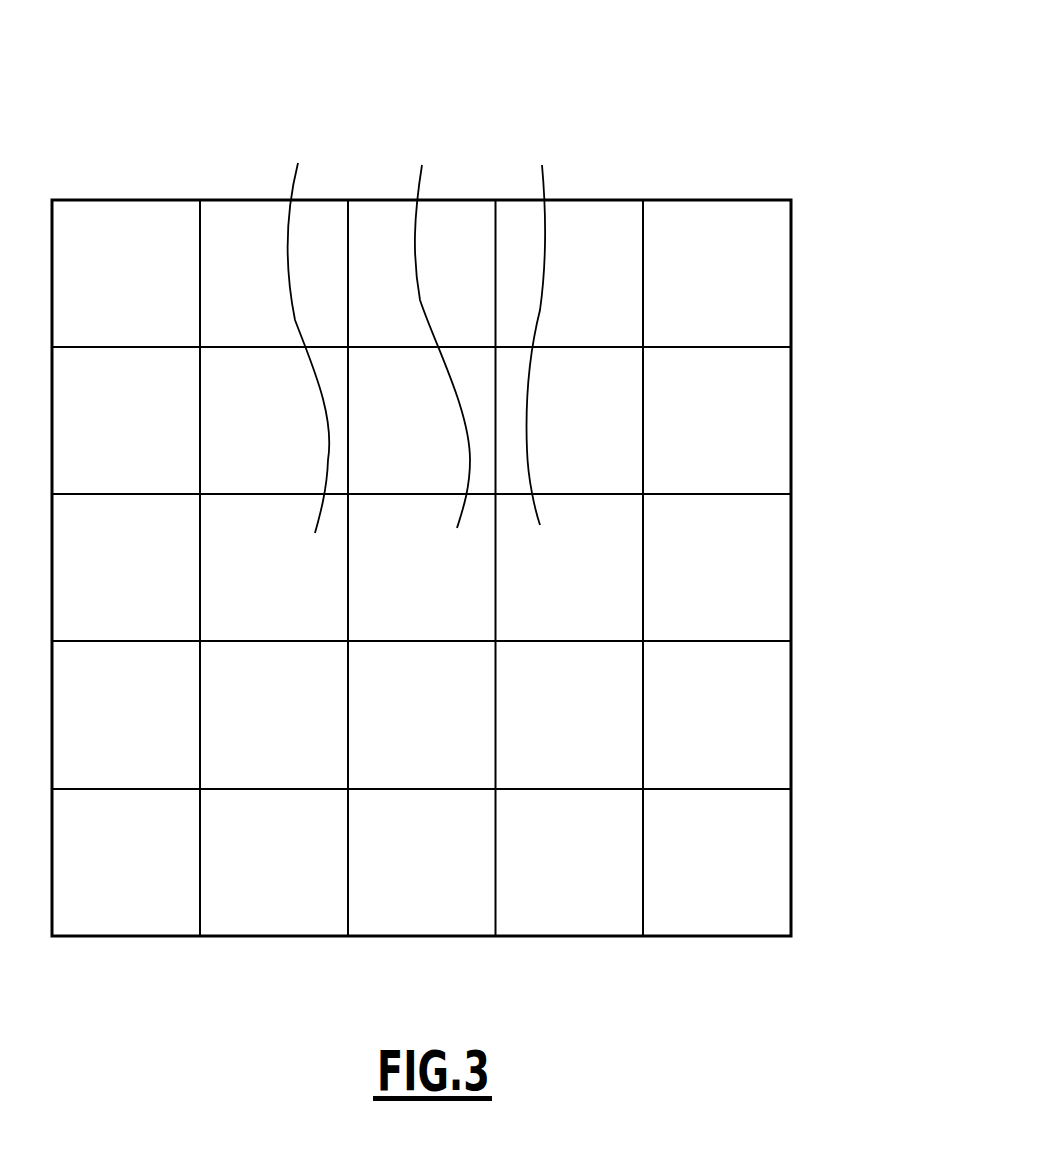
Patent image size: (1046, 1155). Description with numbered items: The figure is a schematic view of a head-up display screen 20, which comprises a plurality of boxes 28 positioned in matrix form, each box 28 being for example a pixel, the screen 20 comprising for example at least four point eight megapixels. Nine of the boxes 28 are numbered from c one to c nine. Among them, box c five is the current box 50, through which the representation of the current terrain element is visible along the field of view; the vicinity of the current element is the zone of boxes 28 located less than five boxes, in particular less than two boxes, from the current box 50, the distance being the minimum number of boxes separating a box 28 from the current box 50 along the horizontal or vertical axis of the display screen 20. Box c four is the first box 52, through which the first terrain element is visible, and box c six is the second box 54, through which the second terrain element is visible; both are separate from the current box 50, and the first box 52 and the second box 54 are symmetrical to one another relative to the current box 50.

The head-up display screen 20 is at (722, 107).
The boxes 28 is at (738, 712).
The current box 50 is at (440, 322).
The first box 52 is at (307, 325).
The second box 54 is at (541, 321).